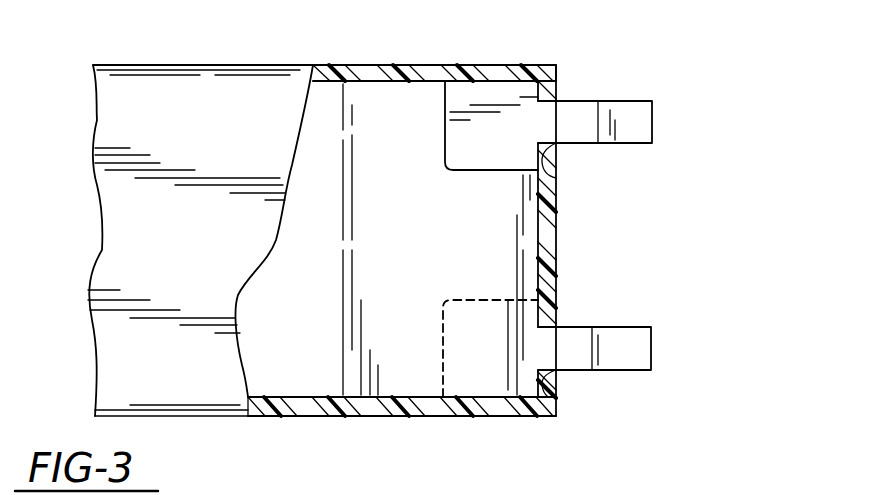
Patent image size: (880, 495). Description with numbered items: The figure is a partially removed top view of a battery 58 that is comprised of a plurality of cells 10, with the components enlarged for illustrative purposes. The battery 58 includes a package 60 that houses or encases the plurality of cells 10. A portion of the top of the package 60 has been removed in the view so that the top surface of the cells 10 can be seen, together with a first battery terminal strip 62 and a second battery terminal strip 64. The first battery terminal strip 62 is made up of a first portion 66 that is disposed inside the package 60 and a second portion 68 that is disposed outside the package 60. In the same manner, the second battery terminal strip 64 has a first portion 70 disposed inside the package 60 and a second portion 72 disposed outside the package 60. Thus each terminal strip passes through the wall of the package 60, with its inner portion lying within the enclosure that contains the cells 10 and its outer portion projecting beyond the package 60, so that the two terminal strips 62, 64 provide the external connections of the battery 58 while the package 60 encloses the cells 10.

The cell 10 is at (415, 240).
The battery 58 is at (618, 41).
The package 60 is at (384, 66).
The first battery terminal strip 62 is at (629, 372).
The second battery terminal strip 64 is at (622, 99).
The first portion of the first battery terminal strip 66 is at (557, 318).
The second portion of the first battery terminal strip 68 is at (628, 327).
The first portion of the second battery terminal strip 70 is at (557, 177).
The second portion of the second battery terminal strip 72 is at (630, 144).